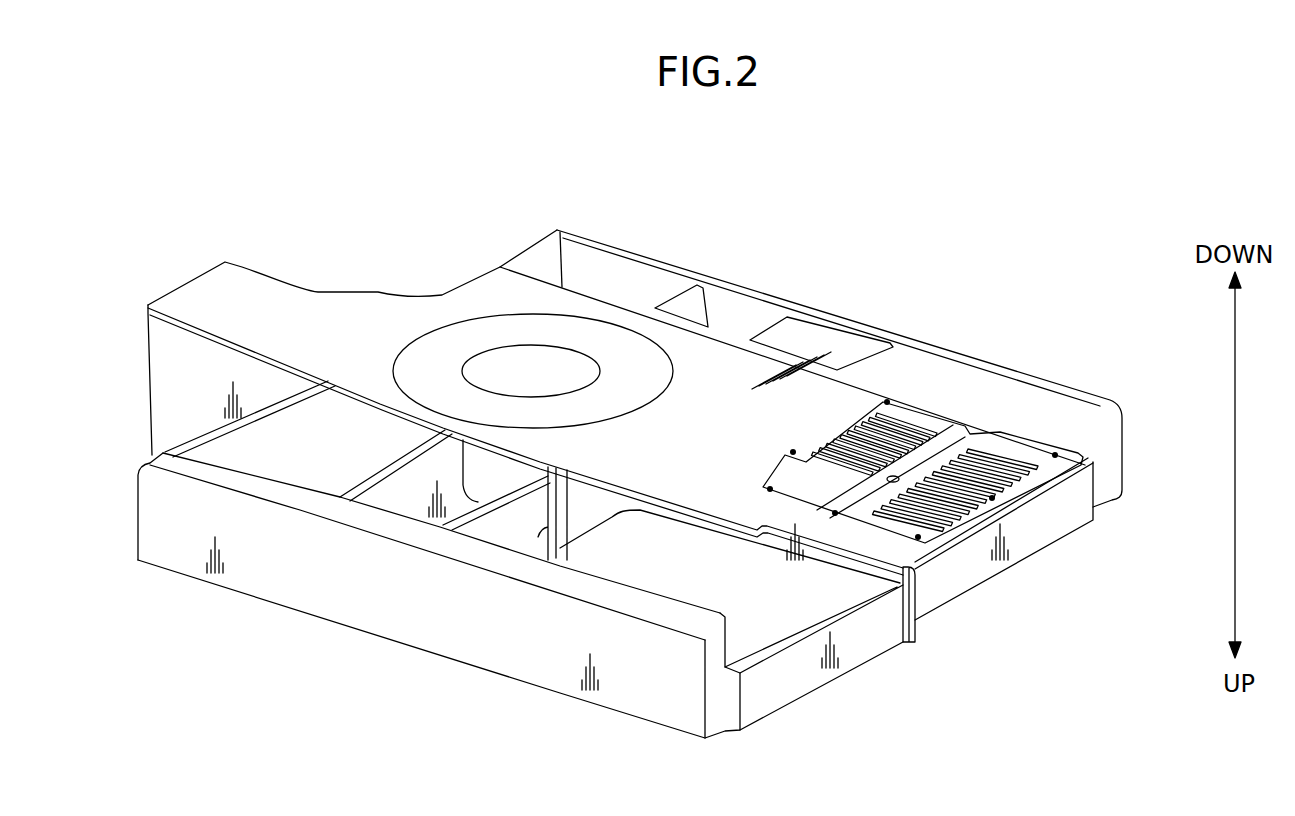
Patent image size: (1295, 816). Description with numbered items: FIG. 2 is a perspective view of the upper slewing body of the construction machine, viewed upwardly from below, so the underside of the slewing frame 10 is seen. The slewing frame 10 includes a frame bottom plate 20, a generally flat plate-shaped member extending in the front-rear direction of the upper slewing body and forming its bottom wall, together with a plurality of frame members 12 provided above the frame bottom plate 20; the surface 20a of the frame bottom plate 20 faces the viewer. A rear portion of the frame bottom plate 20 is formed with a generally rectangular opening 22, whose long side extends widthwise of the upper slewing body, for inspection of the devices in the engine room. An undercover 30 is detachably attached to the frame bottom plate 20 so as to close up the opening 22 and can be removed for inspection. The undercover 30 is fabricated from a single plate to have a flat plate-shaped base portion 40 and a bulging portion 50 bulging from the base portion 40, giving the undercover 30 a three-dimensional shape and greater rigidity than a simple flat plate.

The slewing frame 10 is at (969, 258).
The frame members 12 is at (682, 307).
The frame bottom plate 20 is at (278, 295).
The top plate 20a is at (718, 370).
The opening 22 is at (983, 430).
The undercover 30 is at (1007, 488).
The base portion 40 is at (905, 413).
The bulging portion 50 is at (950, 447).